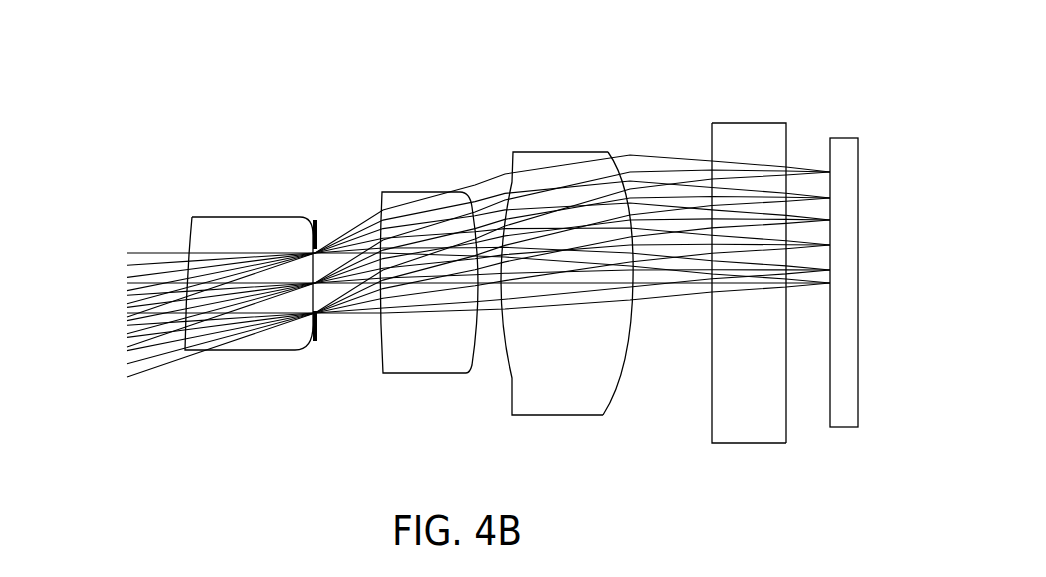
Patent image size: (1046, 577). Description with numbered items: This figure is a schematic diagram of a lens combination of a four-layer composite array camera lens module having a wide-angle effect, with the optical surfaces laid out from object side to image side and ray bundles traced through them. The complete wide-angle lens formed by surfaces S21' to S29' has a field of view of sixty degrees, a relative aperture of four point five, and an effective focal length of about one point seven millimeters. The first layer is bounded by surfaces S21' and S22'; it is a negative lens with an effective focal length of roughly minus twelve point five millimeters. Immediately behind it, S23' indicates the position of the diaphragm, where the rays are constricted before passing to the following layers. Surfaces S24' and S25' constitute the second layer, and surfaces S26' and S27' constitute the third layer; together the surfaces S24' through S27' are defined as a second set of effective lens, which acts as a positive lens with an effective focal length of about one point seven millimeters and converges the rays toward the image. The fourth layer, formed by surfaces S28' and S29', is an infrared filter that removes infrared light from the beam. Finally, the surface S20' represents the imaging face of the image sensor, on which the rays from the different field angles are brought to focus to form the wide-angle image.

The imaging face of the image sensor S20' is at (870, 282).
The object-side surface of the first layer S21' is at (231, 257).
The image-side surface of the first layer S22' is at (292, 254).
The diaphragm S23' is at (334, 232).
The object-side surface of the second layer S24' is at (407, 265).
The image-side surface of the second layer S25' is at (458, 264).
The object-side surface of the third layer S26' is at (552, 264).
The image-side surface of the third layer S27' is at (609, 264).
The object-side surface of the infrared filter S28' is at (732, 267).
The image-side surface of the infrared filter S29' is at (765, 269).